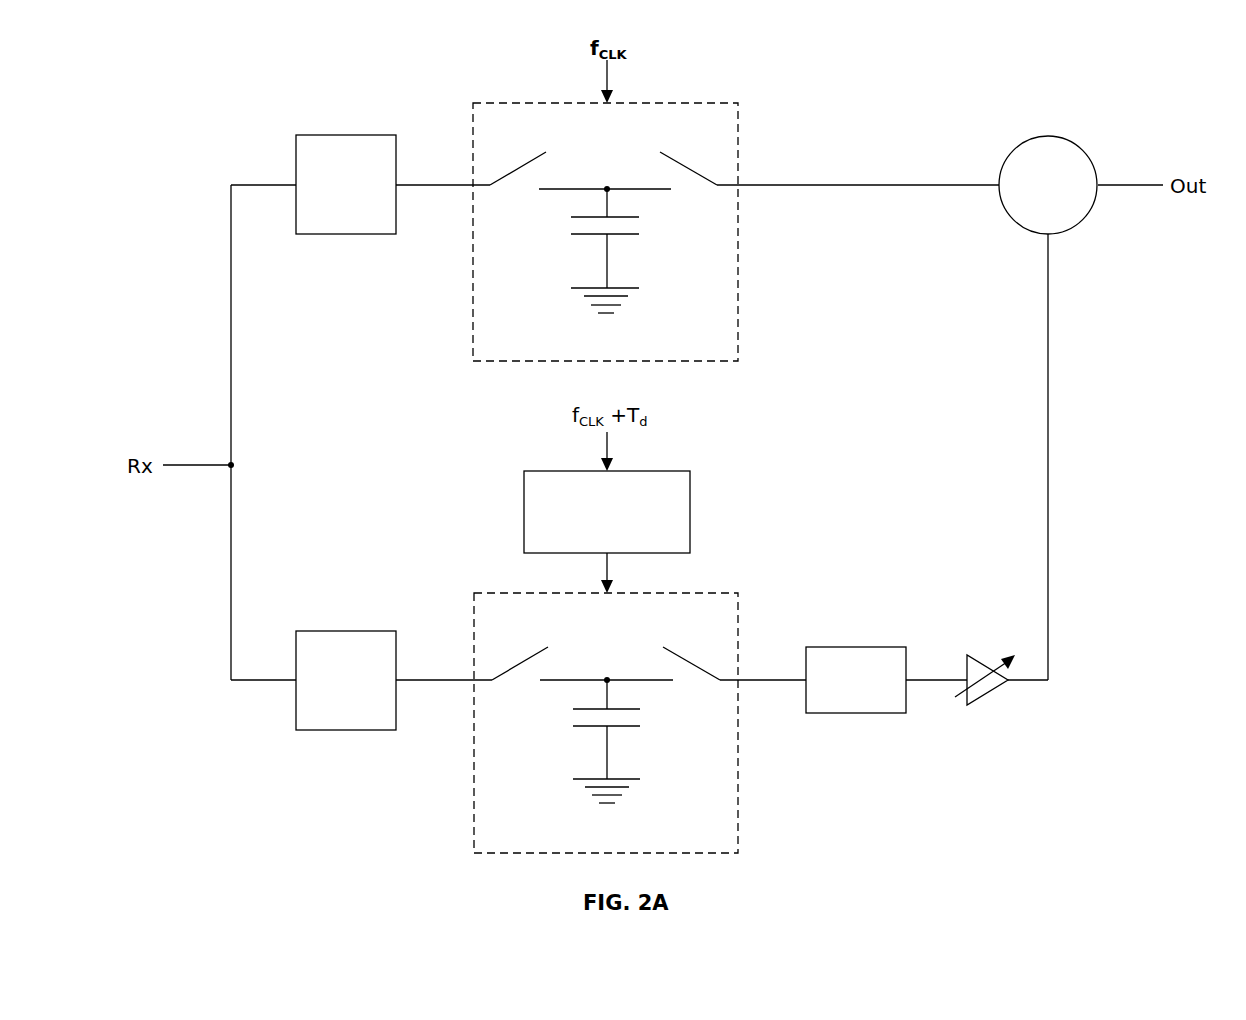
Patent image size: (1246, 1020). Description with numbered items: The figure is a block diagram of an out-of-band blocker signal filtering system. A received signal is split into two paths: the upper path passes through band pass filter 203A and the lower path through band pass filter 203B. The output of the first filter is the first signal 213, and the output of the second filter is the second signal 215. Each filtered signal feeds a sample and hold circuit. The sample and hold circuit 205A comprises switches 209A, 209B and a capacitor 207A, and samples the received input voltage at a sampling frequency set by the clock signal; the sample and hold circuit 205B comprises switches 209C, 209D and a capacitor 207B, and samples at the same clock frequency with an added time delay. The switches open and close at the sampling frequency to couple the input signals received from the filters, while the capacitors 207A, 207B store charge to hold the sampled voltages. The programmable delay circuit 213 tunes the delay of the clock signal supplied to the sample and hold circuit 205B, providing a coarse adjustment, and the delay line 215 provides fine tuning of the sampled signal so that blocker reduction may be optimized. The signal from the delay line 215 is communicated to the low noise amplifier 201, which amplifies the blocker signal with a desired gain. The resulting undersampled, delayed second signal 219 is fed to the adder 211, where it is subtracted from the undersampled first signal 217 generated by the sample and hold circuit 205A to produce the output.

The low noise amplifier 201 is at (998, 685).
The band pass filter BPF1 203A is at (346, 184).
The band pass filter BPF2 203B is at (346, 680).
The sample and hold circuit 205A is at (605, 232).
The sample and hold circuit 205B is at (606, 723).
The capacitor 207A is at (620, 235).
The capacitor 207B is at (622, 727).
The switch 209A is at (530, 160).
The switch 209B is at (678, 160).
The switch 209C is at (531, 653).
The switch 209D is at (679, 653).
The adder 211 is at (1073, 143).
The programmable delay circuit 213 is at (428, 143).
The delay line 215 is at (428, 640).
The undersampled first signal 217 is at (862, 185).
The undersampled, delayed second signal 219 is at (1048, 448).